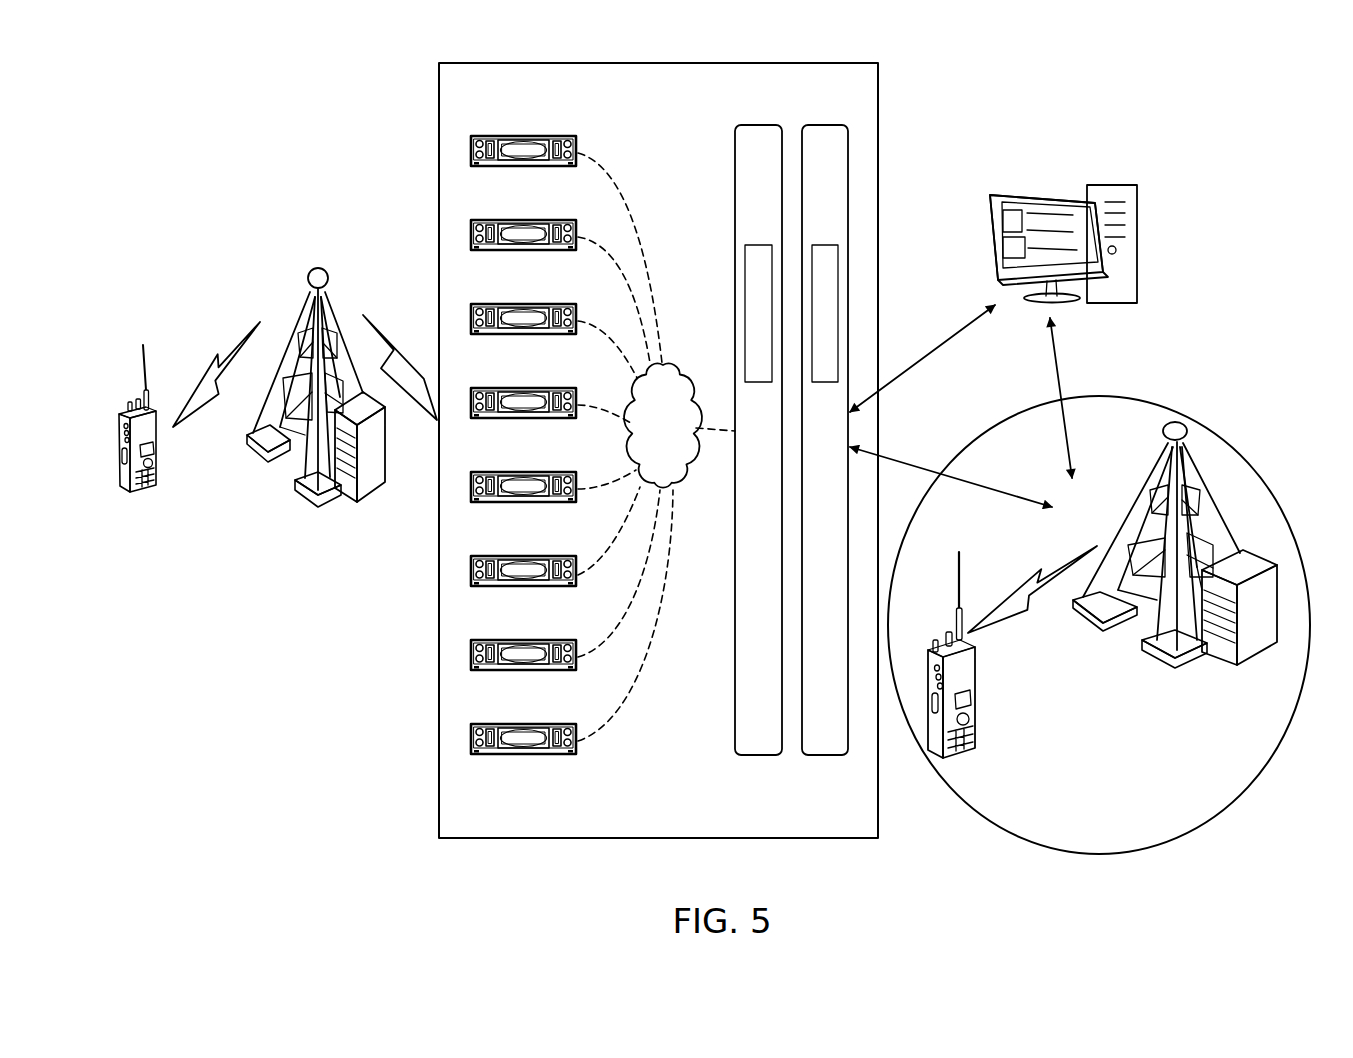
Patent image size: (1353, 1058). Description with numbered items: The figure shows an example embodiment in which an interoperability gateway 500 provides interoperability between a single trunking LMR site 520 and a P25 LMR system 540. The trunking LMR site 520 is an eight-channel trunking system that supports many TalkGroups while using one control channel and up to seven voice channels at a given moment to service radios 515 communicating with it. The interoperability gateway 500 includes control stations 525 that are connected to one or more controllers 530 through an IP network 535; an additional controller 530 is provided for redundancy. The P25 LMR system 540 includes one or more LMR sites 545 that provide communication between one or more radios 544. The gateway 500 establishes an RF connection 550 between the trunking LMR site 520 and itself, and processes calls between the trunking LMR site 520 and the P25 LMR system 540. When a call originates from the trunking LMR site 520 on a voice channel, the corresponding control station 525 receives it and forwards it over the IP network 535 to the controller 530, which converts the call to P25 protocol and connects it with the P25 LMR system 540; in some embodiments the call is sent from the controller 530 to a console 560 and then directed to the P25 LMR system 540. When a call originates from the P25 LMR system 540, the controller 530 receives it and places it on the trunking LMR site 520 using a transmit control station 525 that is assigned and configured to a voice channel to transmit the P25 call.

The interoperability gateway 500 is at (878, 80).
The radios 515 is at (143, 490).
The trunking LMR site 520 is at (309, 272).
The control stations 525 is at (577, 143).
The controllers 530 is at (762, 124).
The IP network 535 is at (680, 372).
The P25 LMR system 540 is at (1280, 733).
The radios 544 is at (975, 705).
The LMR sites 545 is at (1188, 653).
The RF connection 550 is at (393, 341).
The console 560 is at (1112, 185).